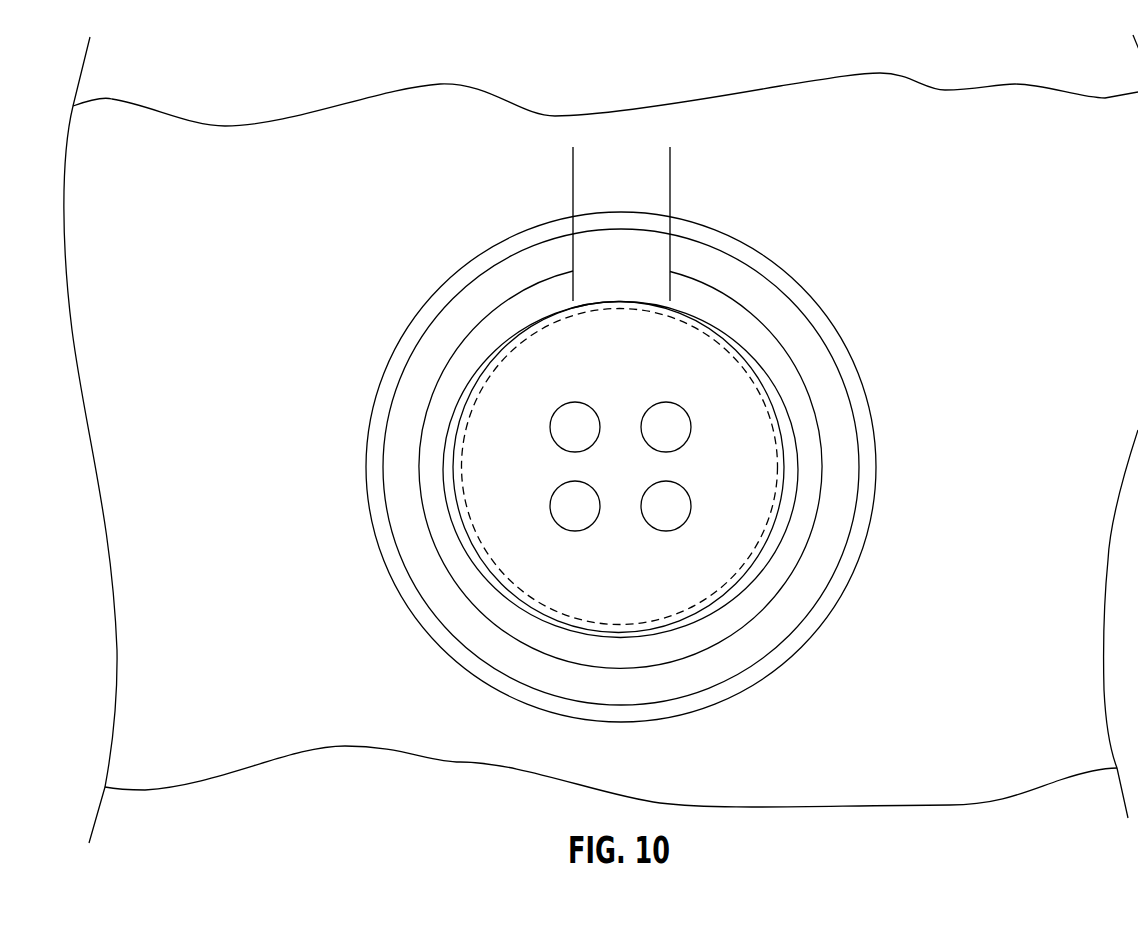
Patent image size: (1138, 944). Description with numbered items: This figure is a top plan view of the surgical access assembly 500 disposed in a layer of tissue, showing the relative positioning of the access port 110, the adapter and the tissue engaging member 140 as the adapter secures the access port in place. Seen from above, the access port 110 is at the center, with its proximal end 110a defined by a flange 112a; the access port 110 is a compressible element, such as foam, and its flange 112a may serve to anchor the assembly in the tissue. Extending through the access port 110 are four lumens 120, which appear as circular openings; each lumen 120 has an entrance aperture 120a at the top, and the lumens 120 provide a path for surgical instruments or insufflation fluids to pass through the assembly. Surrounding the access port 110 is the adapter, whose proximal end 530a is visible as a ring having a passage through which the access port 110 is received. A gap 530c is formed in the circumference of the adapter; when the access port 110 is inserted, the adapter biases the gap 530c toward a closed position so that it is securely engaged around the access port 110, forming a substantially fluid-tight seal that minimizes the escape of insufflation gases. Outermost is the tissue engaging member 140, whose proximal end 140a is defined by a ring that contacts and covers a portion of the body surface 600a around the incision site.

The surgical access assembly 500 is at (601, 436).
The body surface 600a is at (882, 235).
The gap 530c is at (670, 165).
The proximal end of adapter 530a is at (473, 595).
The proximal end of tissue engaging member 140a is at (413, 322).
The tissue engaging member 140 is at (395, 393).
The flange 112a is at (778, 548).
The proximal end of access port 110a is at (493, 427).
The access port 110 is at (465, 509).
The lumen 120 is at (742, 377).
The entrance aperture 120a is at (680, 403).